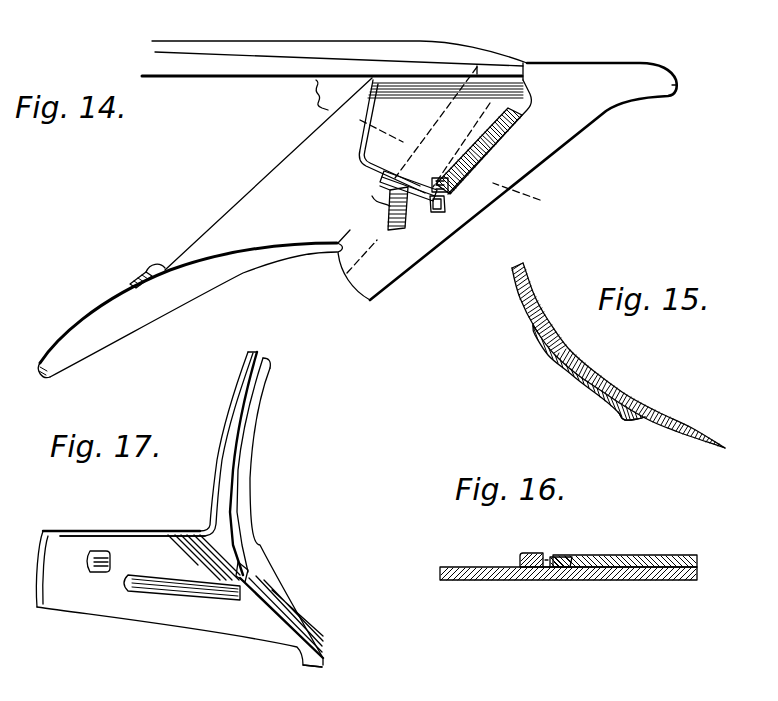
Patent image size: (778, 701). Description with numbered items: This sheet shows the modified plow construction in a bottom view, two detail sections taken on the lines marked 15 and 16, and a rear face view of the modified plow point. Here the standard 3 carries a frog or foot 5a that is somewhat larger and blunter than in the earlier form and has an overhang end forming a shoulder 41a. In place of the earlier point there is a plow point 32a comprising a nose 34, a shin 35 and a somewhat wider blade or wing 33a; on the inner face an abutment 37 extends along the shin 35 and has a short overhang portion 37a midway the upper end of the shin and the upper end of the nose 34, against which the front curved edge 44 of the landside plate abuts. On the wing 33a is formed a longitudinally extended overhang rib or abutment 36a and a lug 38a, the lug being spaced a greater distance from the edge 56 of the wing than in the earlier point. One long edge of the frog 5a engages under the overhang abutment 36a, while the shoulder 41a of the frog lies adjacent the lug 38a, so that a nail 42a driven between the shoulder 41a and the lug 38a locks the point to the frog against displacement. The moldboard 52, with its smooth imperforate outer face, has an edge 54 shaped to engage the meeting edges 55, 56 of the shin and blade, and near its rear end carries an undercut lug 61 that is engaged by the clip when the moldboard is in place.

In FIG. 14, the standard 3 is at (314, 98).
In FIG. 14, the frog or foot 5a is at (445, 137).
In FIG. 15, the frog or foot 5a is at (556, 353).
In FIG. 16, the frog or foot 5a is at (625, 558).
In FIG. 14, the section line 15— 15 is at (447, 163).
In FIG. 14, the section line 16— 16 is at (330, 294).
In FIG. 14, the plow point 32a is at (533, 147).
In FIG. 15, the plow point 32a is at (685, 432).
In FIG. 17, the plow point 32a is at (221, 618).
In FIG. 14, the blade or wing 33a is at (383, 277).
In FIG. 16, the blade or wing 33a is at (650, 581).
In FIG. 17, the blade or wing 33a is at (92, 602).
In FIG. 14, the nose 34 is at (676, 85).
In FIG. 17, the nose 34 is at (323, 665).
In FIG. 17, the shin 35 is at (253, 424).
In FIG. 14, the overhang rib or abutment 36a is at (465, 184).
In FIG. 15, the overhang rib or abutment 36a is at (627, 419).
In FIG. 17, the overhang rib or abutment 36a is at (155, 600).
In FIG. 17, the shoulder or abutment 37 is at (247, 398).
In FIG. 17, the overhang portion 37a is at (241, 505).
In FIG. 14, the lug 38a is at (390, 206).
In FIG. 16, the lug 38a is at (527, 553).
In FIG. 17, the lug 38a is at (96, 550).
In FIG. 14, the shoulder 41a is at (417, 182).
In FIG. 16, the shoulder 41a is at (560, 557).
In FIG. 14, the nail 42a is at (440, 207).
In FIG. 16, the nail 42a is at (547, 565).
In FIG. 14, the front curved edge 44 is at (430, 57).
In FIG. 14, the moldboard 52 is at (243, 255).
In FIG. 15, the moldboard 52 is at (540, 308).
In FIG. 14, the edge of moldboard 54 is at (360, 232).
In FIG. 14, the meeting edge of shin 55 is at (453, 53).
In FIG. 17, the meeting edge of shin 55 is at (226, 412).
In FIG. 14, the meeting edge of blade 56 is at (337, 258).
In FIG. 17, the meeting edge of blade 56 is at (131, 524).
In FIG. 14, the undercut lug 61 is at (151, 270).